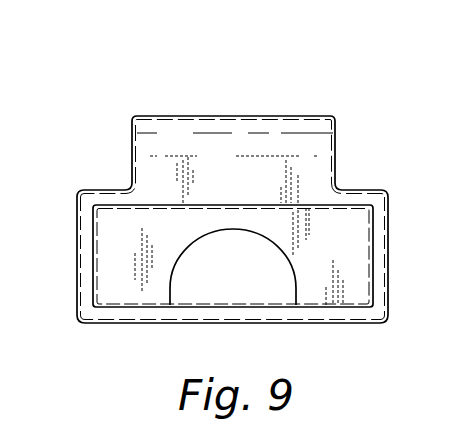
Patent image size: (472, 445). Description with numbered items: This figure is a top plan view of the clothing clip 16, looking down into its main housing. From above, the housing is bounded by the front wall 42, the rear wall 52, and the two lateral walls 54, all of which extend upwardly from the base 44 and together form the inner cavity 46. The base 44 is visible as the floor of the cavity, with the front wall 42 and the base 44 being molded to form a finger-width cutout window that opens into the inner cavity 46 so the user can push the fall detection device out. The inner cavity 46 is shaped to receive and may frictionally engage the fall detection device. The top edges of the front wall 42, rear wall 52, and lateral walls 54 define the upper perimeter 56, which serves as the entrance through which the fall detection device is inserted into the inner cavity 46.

The clothing clip 16 is at (91, 51).
The front wall 42 is at (127, 325).
The base 44 is at (345, 243).
The inner cavity 46 is at (233, 284).
The rear wall 52 is at (232, 202).
The lateral walls 54 is at (78, 261).
The upper perimeter 56 is at (379, 283).